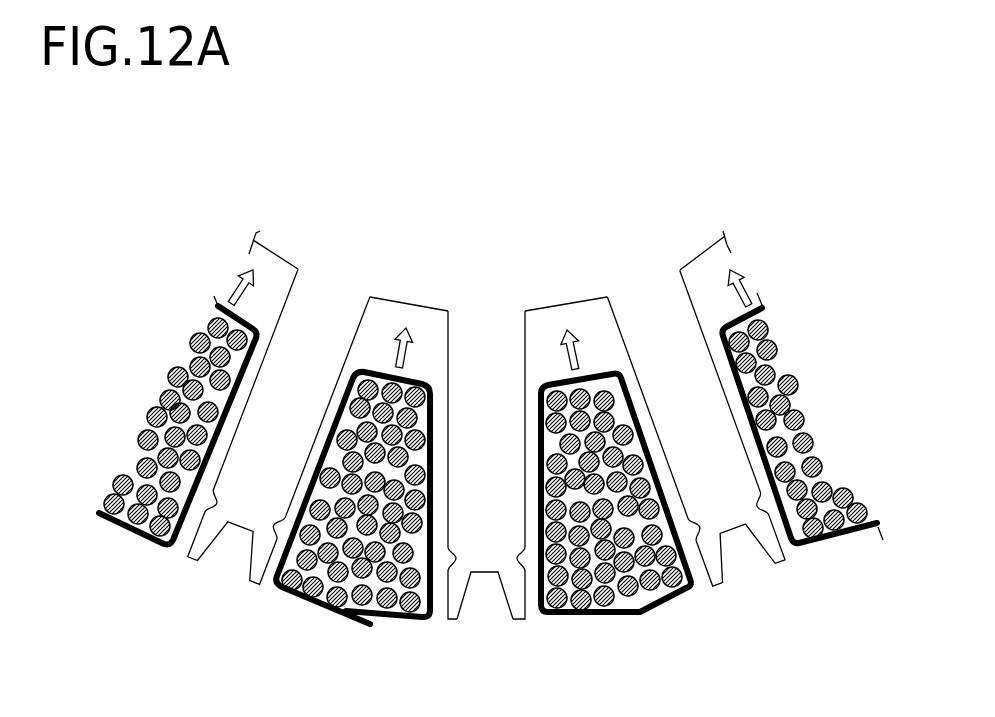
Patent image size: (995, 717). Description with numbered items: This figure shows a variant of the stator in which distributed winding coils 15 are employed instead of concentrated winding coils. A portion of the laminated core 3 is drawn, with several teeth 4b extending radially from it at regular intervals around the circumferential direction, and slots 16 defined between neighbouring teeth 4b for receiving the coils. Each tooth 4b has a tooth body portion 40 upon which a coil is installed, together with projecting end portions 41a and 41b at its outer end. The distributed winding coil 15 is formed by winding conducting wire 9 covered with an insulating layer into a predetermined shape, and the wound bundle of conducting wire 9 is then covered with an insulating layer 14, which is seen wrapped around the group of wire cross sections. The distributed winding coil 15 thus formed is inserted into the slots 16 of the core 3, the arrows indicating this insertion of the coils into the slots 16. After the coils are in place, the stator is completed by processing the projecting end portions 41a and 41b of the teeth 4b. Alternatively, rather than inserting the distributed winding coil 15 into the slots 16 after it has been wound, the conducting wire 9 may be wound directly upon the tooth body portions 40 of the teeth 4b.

The core 3 is at (518, 272).
The slots 16 is at (598, 337).
The insulating layer 14 is at (296, 597).
The conducting wire 9 is at (387, 612).
The projecting end portion 41a is at (448, 608).
The tooth body portion 40 is at (481, 536).
The projecting end portion 41b is at (512, 608).
The distributed winding coil 15 is at (587, 628).
The teeth 4b is at (702, 480).